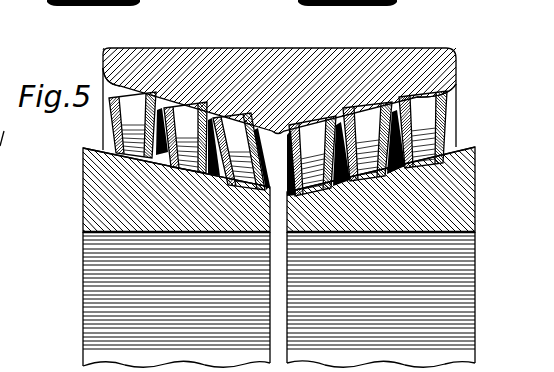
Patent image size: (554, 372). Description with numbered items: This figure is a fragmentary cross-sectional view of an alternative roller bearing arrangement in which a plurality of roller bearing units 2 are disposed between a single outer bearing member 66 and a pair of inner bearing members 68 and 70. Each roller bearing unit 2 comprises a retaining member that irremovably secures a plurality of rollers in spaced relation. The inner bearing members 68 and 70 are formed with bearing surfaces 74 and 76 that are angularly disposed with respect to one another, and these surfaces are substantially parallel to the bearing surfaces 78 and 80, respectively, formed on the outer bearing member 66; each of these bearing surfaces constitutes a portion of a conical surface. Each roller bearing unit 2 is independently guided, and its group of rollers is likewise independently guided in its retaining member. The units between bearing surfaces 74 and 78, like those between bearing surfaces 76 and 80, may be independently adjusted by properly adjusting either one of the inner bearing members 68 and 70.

The roller bearing unit 2 is at (192, 118).
The outer bearing member 66 is at (333, 63).
The inner bearing member 68 is at (110, 218).
The inner bearing member 70 is at (460, 220).
The bearing surface 74 is at (177, 178).
The bearing surface 76 is at (325, 188).
The bearing surface 78 is at (103, 68).
The bearing surface 80 is at (437, 84).